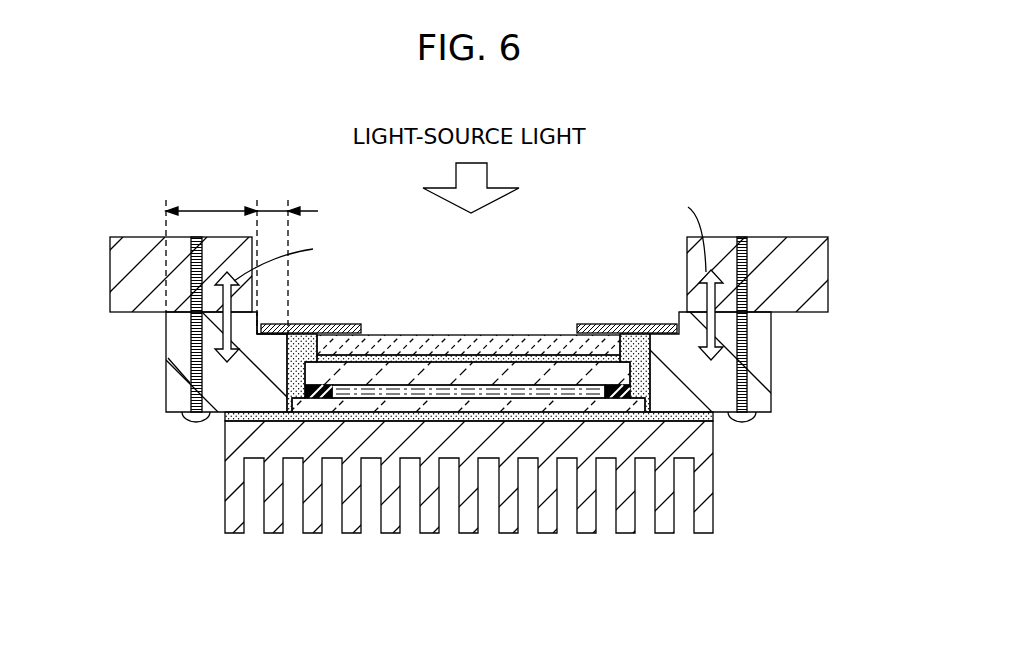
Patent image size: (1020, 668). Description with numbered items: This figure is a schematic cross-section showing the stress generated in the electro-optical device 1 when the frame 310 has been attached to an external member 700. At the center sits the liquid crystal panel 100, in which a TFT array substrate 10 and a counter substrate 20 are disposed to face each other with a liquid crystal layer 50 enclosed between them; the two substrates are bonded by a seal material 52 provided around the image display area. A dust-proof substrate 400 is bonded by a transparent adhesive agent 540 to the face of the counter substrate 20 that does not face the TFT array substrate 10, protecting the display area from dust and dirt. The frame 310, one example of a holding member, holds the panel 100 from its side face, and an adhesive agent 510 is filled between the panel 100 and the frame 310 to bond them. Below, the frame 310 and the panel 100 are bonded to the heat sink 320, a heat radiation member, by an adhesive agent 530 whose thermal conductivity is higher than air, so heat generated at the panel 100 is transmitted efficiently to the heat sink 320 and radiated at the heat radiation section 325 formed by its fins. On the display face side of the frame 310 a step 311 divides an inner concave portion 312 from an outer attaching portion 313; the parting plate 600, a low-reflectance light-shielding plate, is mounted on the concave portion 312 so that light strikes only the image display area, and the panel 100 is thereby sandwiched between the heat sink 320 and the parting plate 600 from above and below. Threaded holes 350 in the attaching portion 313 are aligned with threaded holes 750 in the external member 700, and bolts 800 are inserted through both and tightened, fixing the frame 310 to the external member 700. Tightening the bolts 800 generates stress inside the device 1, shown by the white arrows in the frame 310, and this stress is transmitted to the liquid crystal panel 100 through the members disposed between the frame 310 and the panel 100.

The electro-optical device 1 is at (752, 164).
The TFT array substrate 10 is at (425, 408).
The counter substrate 20 is at (505, 373).
The liquid crystal layer 50 is at (467, 388).
The seal material 52 is at (324, 384).
The liquid crystal panel 100 is at (448, 600).
The frame 310 is at (771, 350).
The step 311 is at (261, 322).
The concave portion 312 is at (267, 206).
The attaching portion 313 is at (209, 207).
The heat sink 320 is at (709, 461).
The heat radiation section 325 is at (390, 545).
The threaded hole 350 is at (189, 362).
The dust-proof substrate 400 is at (523, 337).
The adhesive agent 510 is at (637, 337).
The adhesive agent 530 is at (621, 413).
The transparent adhesive agent 540 is at (490, 357).
The parting plate 600 is at (605, 324).
The external member 700 is at (136, 242).
The threaded hole 750 is at (190, 275).
The bolt 800 is at (196, 424).